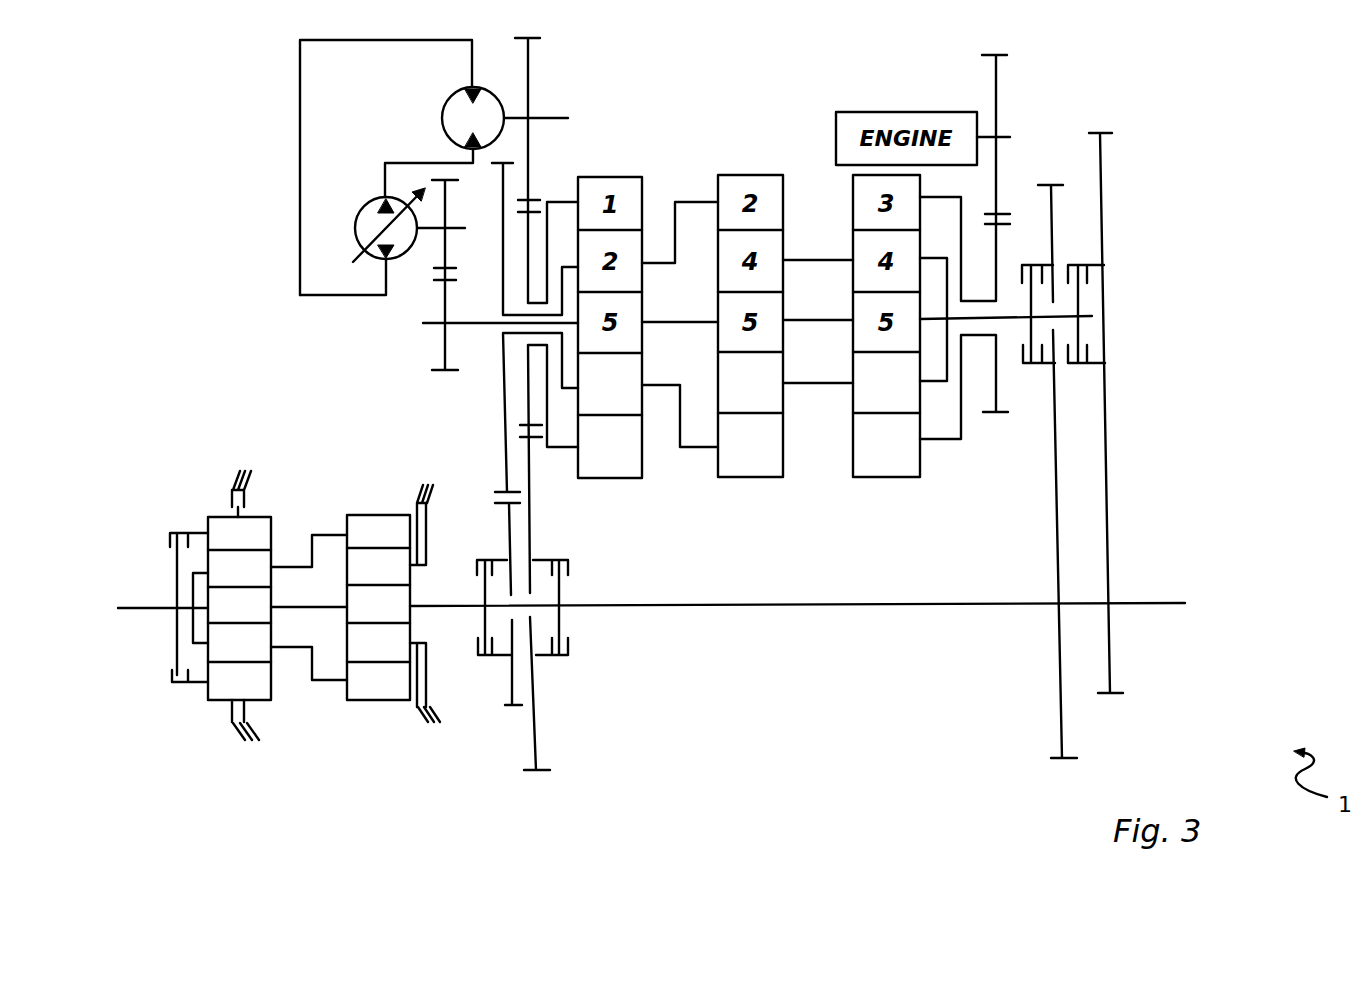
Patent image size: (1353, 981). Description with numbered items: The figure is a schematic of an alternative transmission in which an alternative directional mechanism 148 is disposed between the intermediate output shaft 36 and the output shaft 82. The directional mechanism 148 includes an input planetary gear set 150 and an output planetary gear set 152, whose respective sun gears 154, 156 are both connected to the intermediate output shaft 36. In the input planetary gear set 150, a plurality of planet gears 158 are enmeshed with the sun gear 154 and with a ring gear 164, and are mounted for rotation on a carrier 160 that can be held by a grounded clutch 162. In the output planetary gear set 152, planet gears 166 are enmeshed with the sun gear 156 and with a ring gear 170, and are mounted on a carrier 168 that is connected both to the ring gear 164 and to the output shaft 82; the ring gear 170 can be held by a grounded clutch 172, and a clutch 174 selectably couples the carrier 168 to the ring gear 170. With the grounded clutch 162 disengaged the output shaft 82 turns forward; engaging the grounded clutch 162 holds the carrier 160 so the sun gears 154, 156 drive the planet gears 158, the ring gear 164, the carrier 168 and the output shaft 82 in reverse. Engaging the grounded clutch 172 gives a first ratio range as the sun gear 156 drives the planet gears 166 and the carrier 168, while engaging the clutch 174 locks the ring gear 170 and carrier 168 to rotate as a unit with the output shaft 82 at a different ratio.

The intermediate output shaft 36 is at (765, 605).
The output shaft 82 is at (128, 610).
The directional mechanism 148 is at (152, 504).
The input planetary gear set 150 is at (350, 711).
The output planetary gear set 152 is at (207, 707).
The sun gear 154 is at (413, 620).
The sun gear 156 is at (272, 620).
The planet gears 158 is at (413, 578).
The carrier 160 is at (427, 556).
The grounded clutch 162 is at (428, 511).
The ring gear 164 is at (352, 515).
The planet gears 166 is at (272, 558).
The carrier 168 is at (290, 572).
The ring gear 170 is at (210, 517).
The grounded clutch 172 is at (246, 494).
The clutch 174 is at (172, 688).